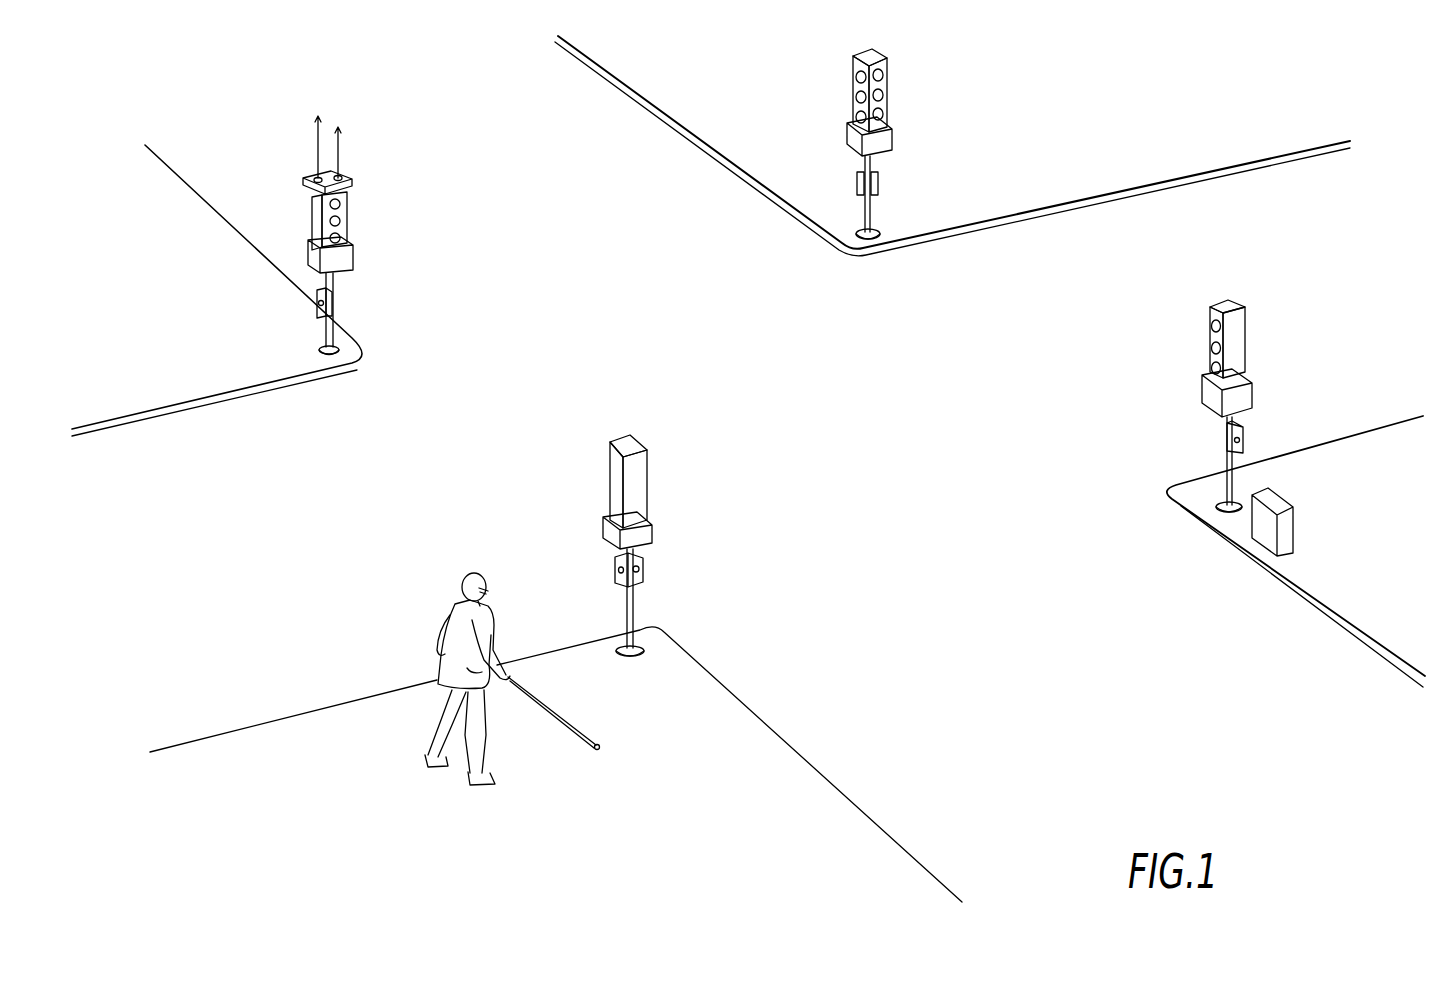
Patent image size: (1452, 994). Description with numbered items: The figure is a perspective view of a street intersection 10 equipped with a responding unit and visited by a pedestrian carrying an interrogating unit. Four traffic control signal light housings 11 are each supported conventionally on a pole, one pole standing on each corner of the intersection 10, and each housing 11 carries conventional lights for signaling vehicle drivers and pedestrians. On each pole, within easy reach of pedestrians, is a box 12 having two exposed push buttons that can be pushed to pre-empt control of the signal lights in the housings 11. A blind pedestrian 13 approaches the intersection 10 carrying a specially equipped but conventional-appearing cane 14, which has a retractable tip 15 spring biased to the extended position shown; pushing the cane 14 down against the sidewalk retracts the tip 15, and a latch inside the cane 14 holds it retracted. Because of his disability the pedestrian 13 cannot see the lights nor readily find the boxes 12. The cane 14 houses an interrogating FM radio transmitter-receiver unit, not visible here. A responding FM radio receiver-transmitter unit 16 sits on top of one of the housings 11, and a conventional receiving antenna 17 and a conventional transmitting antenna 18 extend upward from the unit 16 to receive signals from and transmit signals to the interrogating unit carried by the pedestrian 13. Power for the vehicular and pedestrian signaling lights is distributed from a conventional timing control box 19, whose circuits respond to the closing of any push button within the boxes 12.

The street intersection 10 is at (661, 354).
The traffic control signal light housing 11 is at (357, 222).
The box 12 is at (316, 305).
The blind pedestrian 13 is at (497, 596).
The cane 14 is at (545, 680).
The retractable tip 15 is at (600, 747).
The responding FM radio receiver-transmitter unit 16 is at (303, 182).
The receiving antenna 17 is at (317, 136).
The transmitting antenna 18 is at (339, 146).
The timing control box 19 is at (1285, 499).